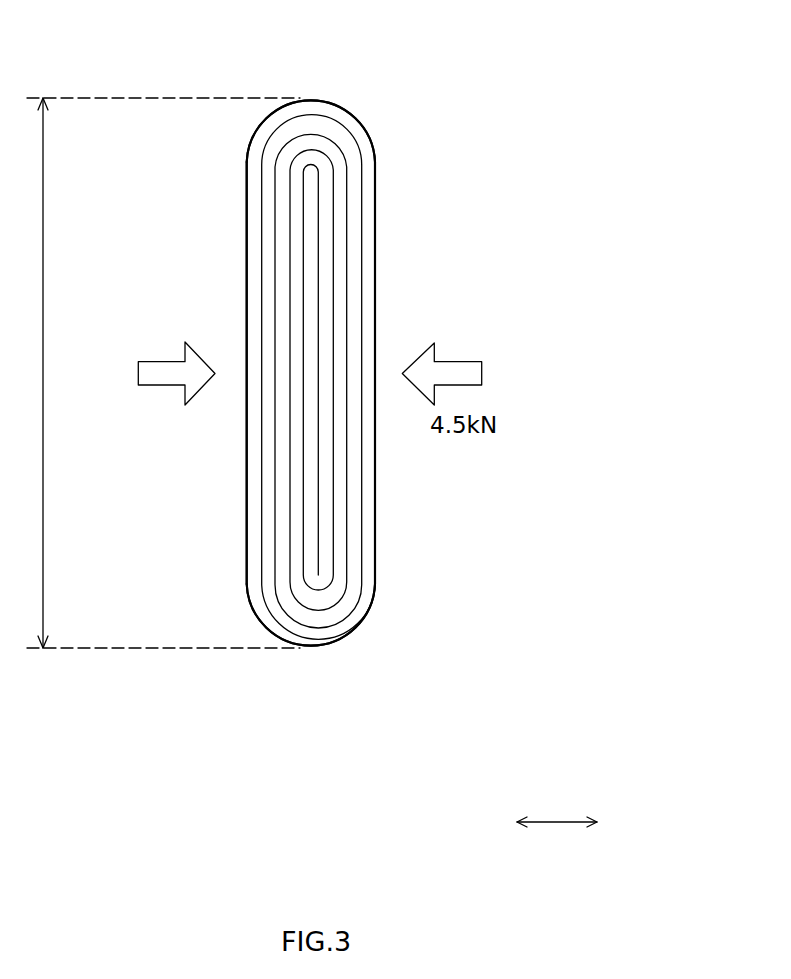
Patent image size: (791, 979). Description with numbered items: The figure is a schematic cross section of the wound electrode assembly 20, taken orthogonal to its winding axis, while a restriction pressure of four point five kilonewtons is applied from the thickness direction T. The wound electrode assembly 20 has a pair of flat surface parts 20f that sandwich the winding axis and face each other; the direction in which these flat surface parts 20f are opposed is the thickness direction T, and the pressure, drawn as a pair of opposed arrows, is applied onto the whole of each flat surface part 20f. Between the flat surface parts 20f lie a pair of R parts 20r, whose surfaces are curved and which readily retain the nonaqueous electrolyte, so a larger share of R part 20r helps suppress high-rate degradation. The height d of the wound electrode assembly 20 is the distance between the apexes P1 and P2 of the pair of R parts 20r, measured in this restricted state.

The wound electrode assembly 20 is at (400, 75).
The R part 20r is at (362, 126).
The flat surface part 20f is at (247, 495).
The apex of R part P1 is at (310, 98).
The apex of R part P2 is at (310, 650).
The height of wound electrode assembly d is at (159, 373).
The thickness direction T is at (557, 836).